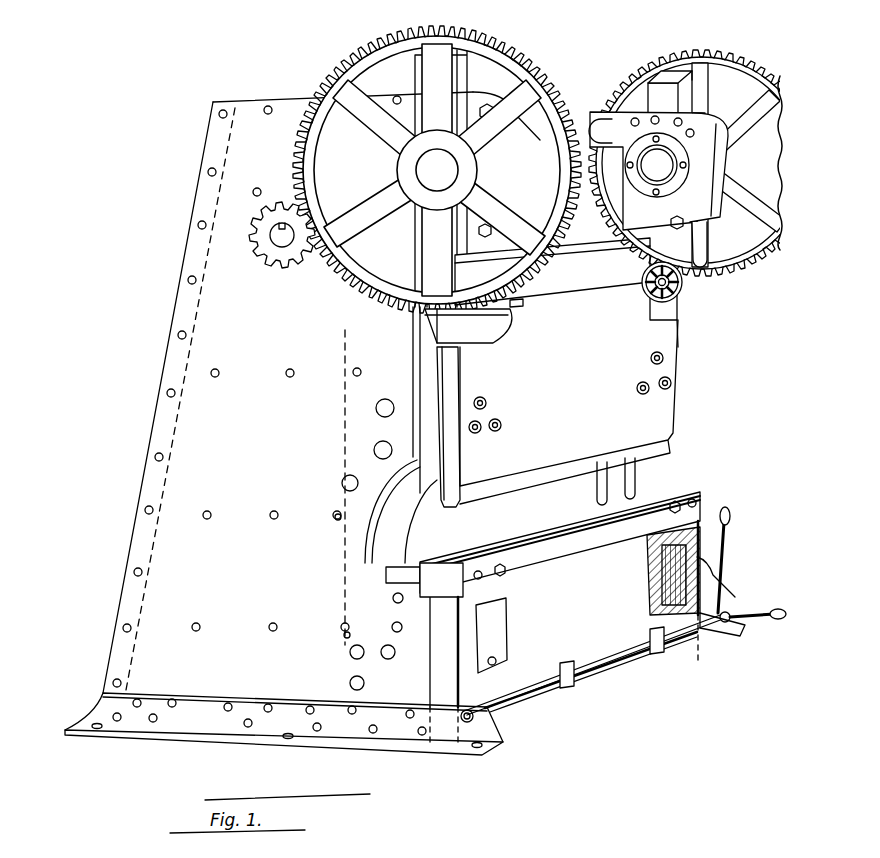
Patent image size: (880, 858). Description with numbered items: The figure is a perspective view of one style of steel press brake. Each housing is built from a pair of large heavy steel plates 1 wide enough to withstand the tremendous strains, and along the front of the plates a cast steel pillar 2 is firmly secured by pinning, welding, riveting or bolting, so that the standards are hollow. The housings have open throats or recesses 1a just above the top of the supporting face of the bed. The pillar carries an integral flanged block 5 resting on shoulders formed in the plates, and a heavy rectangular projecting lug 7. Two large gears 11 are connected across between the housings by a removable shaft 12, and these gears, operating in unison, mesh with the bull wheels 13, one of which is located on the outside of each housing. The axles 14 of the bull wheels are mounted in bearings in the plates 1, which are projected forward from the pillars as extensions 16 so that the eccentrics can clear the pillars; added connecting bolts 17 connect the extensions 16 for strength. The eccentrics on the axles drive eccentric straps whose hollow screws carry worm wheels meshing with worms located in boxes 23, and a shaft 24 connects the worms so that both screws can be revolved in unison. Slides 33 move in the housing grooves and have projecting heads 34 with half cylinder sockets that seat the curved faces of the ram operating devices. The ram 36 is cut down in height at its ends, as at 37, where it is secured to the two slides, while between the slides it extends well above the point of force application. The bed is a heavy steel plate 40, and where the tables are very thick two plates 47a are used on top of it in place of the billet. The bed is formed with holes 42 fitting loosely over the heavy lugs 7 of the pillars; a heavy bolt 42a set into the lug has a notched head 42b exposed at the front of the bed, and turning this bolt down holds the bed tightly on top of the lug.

The steel plates 1 is at (413, 380).
The open throats 1a is at (393, 533).
The cast steel pillars 2 is at (448, 405).
The flanged blocks 5 is at (398, 576).
The rectangular projecting lug 7 is at (700, 531).
The large gears 11 is at (290, 262).
The shaft 12 is at (280, 240).
The bull wheels 13 is at (688, 50).
The axles 14 is at (657, 170).
The extensions 16 is at (476, 100).
The connecting bolts 17 is at (699, 232).
The boxes 23 is at (513, 306).
The shaft 24 is at (577, 292).
The slides 33 is at (430, 396).
The projecting heads 34 is at (463, 330).
The ram 36 is at (569, 412).
The cut-down ends 37 is at (366, 475).
The steel plate 40 is at (556, 624).
The holes 42 is at (475, 640).
The bolt 42a is at (650, 590).
The notched head 42b is at (652, 626).
The plates 47a is at (549, 548).